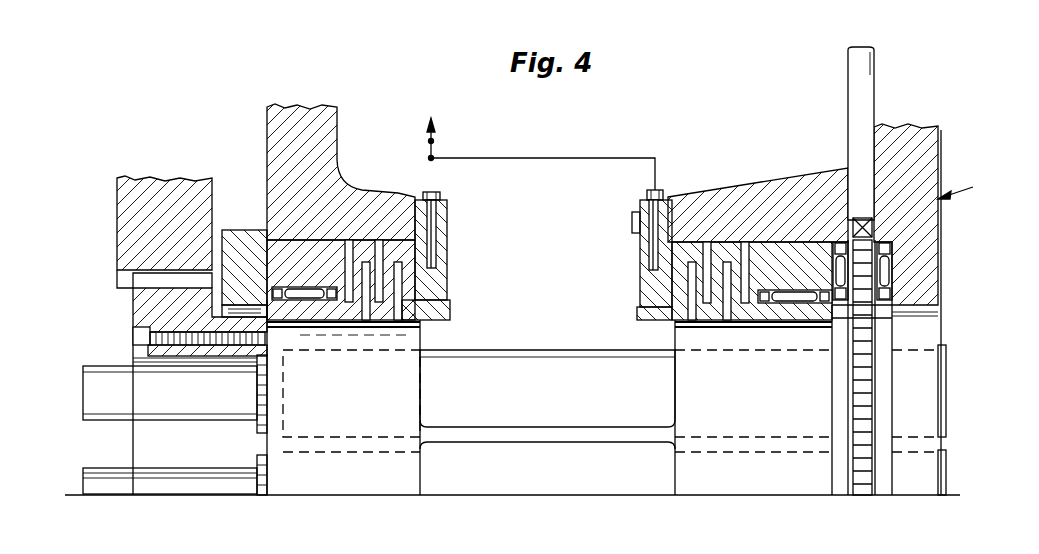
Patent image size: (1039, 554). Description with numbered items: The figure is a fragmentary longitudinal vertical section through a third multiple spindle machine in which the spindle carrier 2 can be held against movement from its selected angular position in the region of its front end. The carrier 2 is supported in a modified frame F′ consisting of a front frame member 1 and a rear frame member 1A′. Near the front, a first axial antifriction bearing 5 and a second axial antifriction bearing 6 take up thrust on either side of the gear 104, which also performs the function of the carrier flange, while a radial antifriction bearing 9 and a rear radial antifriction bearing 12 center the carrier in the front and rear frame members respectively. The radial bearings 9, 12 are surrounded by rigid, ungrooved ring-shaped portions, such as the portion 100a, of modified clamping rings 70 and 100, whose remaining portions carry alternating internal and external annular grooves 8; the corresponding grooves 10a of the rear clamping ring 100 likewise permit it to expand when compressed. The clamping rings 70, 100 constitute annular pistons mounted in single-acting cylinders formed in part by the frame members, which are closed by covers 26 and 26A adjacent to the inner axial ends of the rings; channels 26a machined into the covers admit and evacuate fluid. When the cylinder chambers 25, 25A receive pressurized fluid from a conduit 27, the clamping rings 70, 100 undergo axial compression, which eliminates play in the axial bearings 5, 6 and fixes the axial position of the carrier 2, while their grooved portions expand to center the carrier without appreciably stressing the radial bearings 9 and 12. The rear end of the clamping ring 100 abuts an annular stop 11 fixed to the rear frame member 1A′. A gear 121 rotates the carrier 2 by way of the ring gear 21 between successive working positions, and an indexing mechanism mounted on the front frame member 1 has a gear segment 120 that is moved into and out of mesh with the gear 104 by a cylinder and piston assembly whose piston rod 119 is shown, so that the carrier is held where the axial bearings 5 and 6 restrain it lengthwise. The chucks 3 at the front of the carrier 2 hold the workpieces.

The front frame member 1 is at (927, 173).
The rear frame member 1A′ is at (322, 150).
The spindle carrier 2 is at (921, 333).
The rotor cylinders 3 is at (97, 473).
The front axial antifriction bearing 5 is at (883, 278).
The rear axial antifriction bearing 6 is at (842, 270).
The annular grooves 8 is at (746, 242).
The radial antifriction bearing 9 is at (792, 288).
The slots 10a is at (380, 241).
The annular stop 11 is at (238, 243).
The rear radial antifriction bearing 12 is at (313, 302).
The ring gear 21 is at (158, 282).
The cylinder chamber 25 is at (640, 295).
The cylinder chamber 25A is at (412, 288).
The cover 26 is at (640, 263).
The cover 26A is at (448, 250).
The channels 26a is at (447, 212).
The conduit 27 is at (540, 156).
The clamping ring 70 is at (767, 242).
The clamping ring 100 is at (373, 327).
The ring-shaped portion 100a is at (267, 235).
The gear 104 is at (862, 388).
The piston rod 119 is at (867, 78).
The gear segment 120 is at (875, 227).
The gear 121 is at (130, 235).
The frame F′ is at (966, 185).